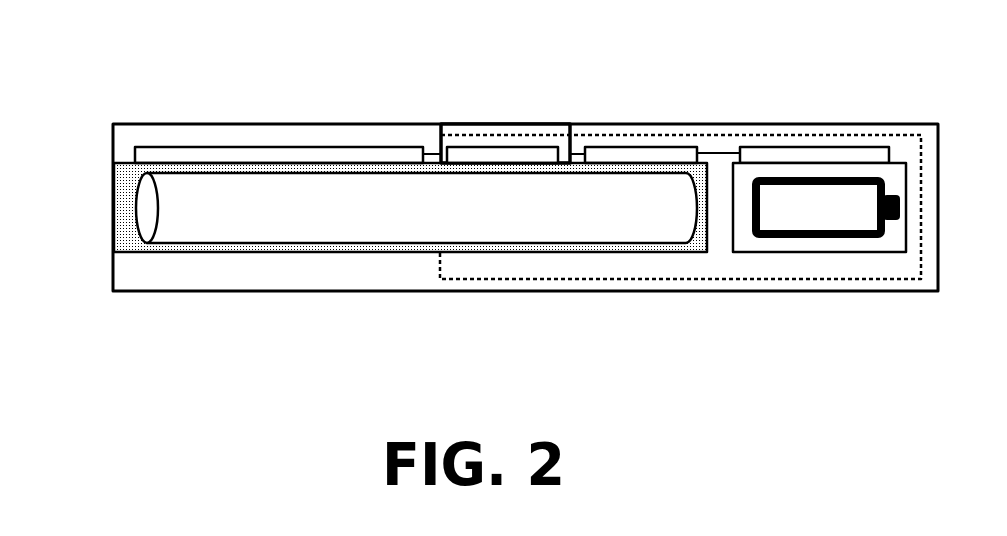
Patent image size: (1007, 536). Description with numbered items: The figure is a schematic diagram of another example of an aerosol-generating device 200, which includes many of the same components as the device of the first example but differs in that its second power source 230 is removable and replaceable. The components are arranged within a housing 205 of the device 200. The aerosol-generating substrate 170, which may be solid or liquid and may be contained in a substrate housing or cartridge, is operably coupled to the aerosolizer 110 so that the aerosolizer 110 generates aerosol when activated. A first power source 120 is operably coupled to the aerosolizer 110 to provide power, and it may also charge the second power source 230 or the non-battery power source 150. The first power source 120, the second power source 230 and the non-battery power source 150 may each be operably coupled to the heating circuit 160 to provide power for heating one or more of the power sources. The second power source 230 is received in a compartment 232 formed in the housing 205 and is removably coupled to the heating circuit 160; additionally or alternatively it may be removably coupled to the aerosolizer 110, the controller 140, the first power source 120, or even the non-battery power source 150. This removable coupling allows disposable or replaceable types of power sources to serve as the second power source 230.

The aerosol-generating device 200 is at (100, 113).
The housing 205 is at (710, 124).
The aerosolizer 110 is at (260, 146).
The compartment 232 is at (440, 154).
The second power source 230 is at (499, 146).
The controller 140 is at (646, 146).
The non-battery power source 150 is at (821, 146).
The aerosol-generating substrate 170 is at (412, 243).
The heating circuit 160 is at (610, 279).
The first power source 120 is at (817, 237).